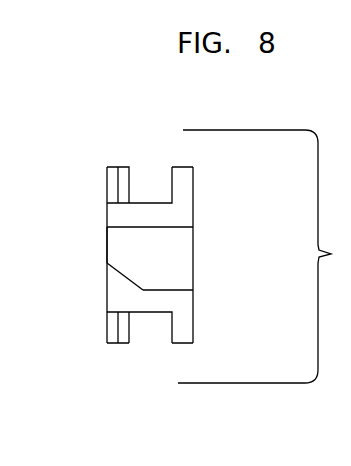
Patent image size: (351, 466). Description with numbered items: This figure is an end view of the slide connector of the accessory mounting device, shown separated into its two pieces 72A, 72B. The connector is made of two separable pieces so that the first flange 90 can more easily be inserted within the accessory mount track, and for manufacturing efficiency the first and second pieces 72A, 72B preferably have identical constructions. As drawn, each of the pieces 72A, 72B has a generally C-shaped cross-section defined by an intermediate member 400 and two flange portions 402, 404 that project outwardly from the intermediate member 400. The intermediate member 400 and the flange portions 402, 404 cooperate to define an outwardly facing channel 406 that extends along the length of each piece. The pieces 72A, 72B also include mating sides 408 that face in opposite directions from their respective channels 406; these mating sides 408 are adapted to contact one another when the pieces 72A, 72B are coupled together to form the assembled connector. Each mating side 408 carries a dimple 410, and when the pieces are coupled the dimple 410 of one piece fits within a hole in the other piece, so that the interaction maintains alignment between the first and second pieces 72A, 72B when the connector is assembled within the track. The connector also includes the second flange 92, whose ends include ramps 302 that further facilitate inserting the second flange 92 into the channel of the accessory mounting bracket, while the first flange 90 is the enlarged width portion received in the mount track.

The first piece of slide connector 72A is at (196, 167).
The second piece of slide connector 72B is at (195, 346).
The first flange 90 is at (196, 202).
The second flange 92 is at (105, 178).
The ramp 302 is at (128, 166).
The intermediate member 400 is at (163, 228).
The flange portion 402 is at (109, 166).
The flange portion 404 is at (196, 186).
The outwardly facing channel 406 is at (150, 192).
The mating side 408 is at (166, 229).
The dimple 410 is at (113, 227).